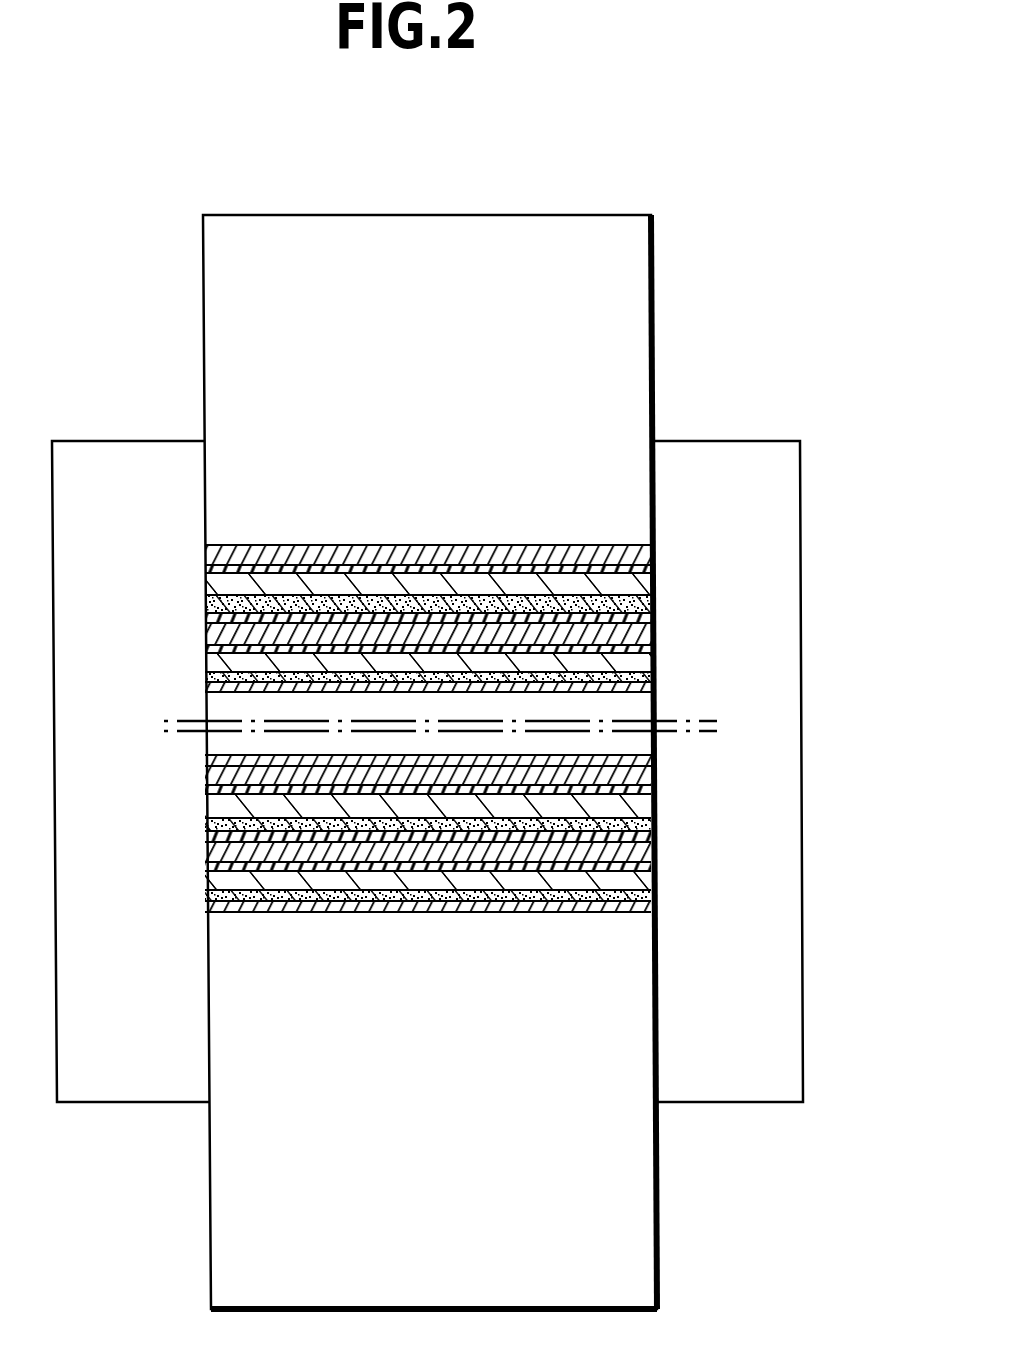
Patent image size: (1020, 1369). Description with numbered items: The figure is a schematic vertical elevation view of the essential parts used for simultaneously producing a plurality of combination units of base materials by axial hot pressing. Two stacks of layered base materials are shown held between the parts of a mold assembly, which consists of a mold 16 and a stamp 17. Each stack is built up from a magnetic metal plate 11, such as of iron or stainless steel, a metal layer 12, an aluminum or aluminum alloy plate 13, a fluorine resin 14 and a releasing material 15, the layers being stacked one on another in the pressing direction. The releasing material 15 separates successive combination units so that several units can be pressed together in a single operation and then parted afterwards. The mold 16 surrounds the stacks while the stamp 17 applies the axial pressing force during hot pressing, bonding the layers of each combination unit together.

The magnetic metal plate 11 is at (640, 553).
The metal layer 12 is at (640, 571).
The aluminum or aluminum alloy plate 13 is at (622, 590).
The fluorine resin 14 is at (640, 608).
The releasing material 15 is at (640, 619).
The mold 16 is at (695, 467).
The stamp 17 is at (613, 247).